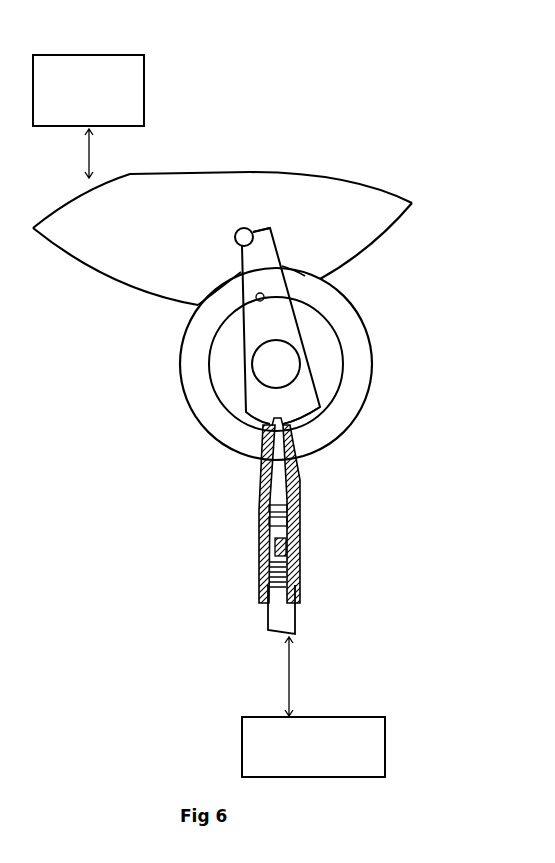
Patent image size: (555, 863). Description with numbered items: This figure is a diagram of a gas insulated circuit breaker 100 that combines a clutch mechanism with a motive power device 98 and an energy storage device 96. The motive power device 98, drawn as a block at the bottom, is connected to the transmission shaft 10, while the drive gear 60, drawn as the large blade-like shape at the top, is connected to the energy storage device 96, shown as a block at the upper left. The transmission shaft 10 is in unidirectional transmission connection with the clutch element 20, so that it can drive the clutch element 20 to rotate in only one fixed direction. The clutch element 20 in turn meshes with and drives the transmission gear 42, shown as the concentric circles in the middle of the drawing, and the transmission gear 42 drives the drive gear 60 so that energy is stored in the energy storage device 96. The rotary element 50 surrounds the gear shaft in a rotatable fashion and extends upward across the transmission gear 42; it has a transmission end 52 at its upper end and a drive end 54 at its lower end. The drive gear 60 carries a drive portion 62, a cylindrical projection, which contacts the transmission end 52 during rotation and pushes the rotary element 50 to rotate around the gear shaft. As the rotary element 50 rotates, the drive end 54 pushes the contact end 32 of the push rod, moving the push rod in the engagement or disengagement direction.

The transmission shaft 10 is at (259, 582).
The clutch element 20 is at (259, 488).
The contact end 32 is at (270, 426).
The transmission gear 42 is at (200, 390).
The rotary element 50 is at (277, 331).
The transmission end 52 is at (268, 240).
The drive end 54 is at (306, 412).
The drive gear 60 is at (247, 208).
The drive portion 62 is at (237, 244).
The energy storage device 96 is at (104, 55).
The motive power device 98 is at (385, 745).
The gas insulated circuit breaker 100 is at (318, 137).